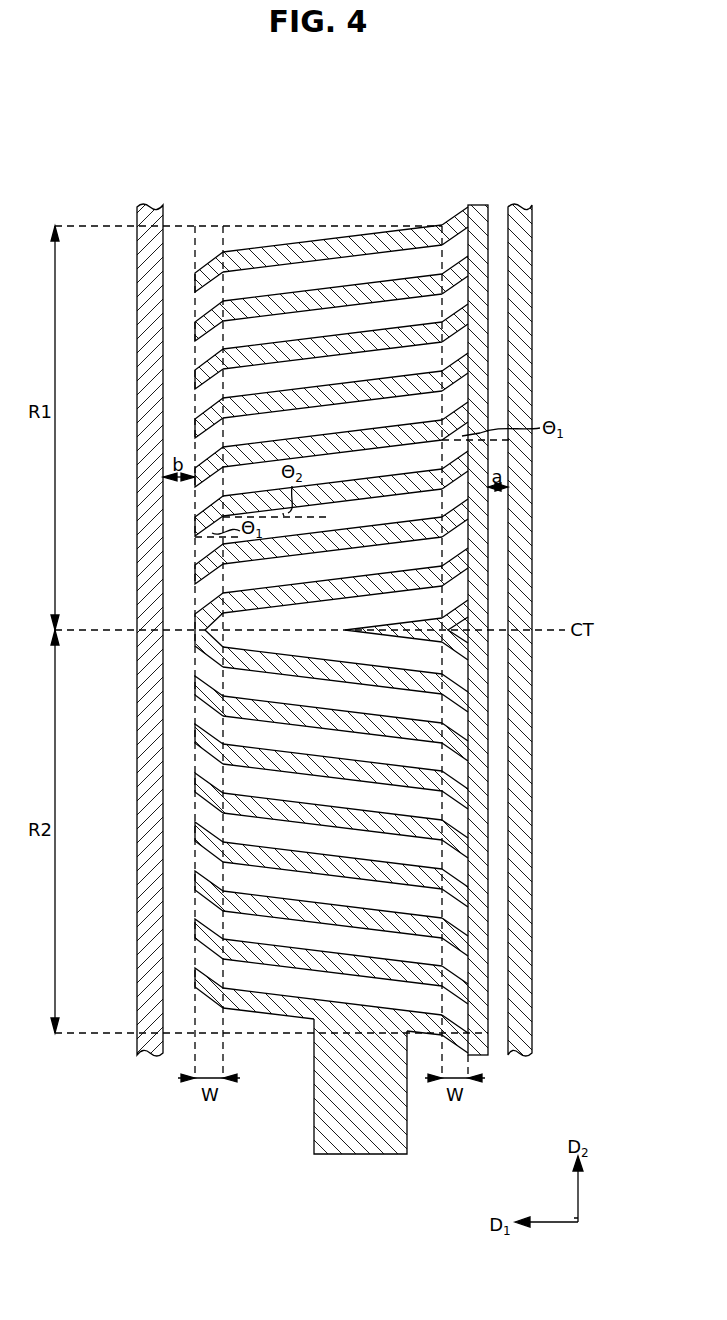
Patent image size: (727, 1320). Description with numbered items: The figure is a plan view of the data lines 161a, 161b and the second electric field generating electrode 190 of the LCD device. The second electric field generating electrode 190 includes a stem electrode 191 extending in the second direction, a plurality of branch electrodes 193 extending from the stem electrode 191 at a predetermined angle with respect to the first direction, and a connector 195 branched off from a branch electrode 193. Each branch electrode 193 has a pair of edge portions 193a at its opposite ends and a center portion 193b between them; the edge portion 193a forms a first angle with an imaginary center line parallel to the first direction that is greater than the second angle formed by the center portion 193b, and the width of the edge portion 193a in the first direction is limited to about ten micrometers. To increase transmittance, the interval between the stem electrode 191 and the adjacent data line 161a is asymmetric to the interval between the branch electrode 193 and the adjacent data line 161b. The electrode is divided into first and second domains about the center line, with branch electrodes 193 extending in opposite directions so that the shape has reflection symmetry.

The second electric field generating electrode 190 is at (477, 104).
The stem electrode 191 is at (475, 215).
The branch electrode 193 is at (427, 147).
The edge portion 193a is at (204, 258).
The center portion 193b is at (315, 240).
The connector 195 is at (358, 1155).
The data line 161a is at (532, 344).
The data line 161b is at (140, 340).